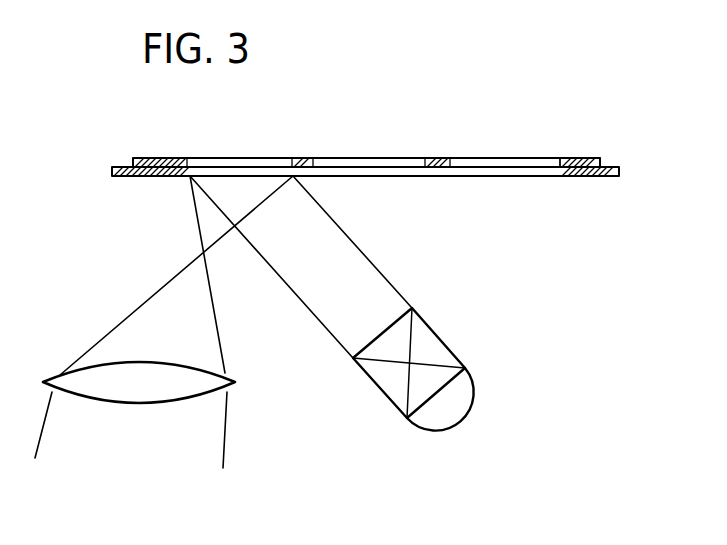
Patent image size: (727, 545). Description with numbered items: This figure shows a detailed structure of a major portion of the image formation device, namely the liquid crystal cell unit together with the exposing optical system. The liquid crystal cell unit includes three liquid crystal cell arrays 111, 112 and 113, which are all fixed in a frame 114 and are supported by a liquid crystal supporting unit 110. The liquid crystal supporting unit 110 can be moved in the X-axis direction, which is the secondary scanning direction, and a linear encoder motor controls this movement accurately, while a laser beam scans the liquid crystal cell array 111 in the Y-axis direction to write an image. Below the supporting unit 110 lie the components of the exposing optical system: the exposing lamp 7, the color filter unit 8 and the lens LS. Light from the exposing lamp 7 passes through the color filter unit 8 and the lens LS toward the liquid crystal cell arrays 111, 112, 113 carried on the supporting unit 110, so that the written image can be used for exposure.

The liquid crystal supporting unit 110 is at (600, 177).
The liquid crystal cell array 111 is at (245, 160).
The liquid crystal cell array 112 is at (383, 162).
The liquid crystal cell array 113 is at (515, 162).
The frame 114 is at (598, 160).
The color filter unit 8 is at (430, 335).
The exposing lamp 7 is at (458, 407).
The lens LS is at (172, 397).